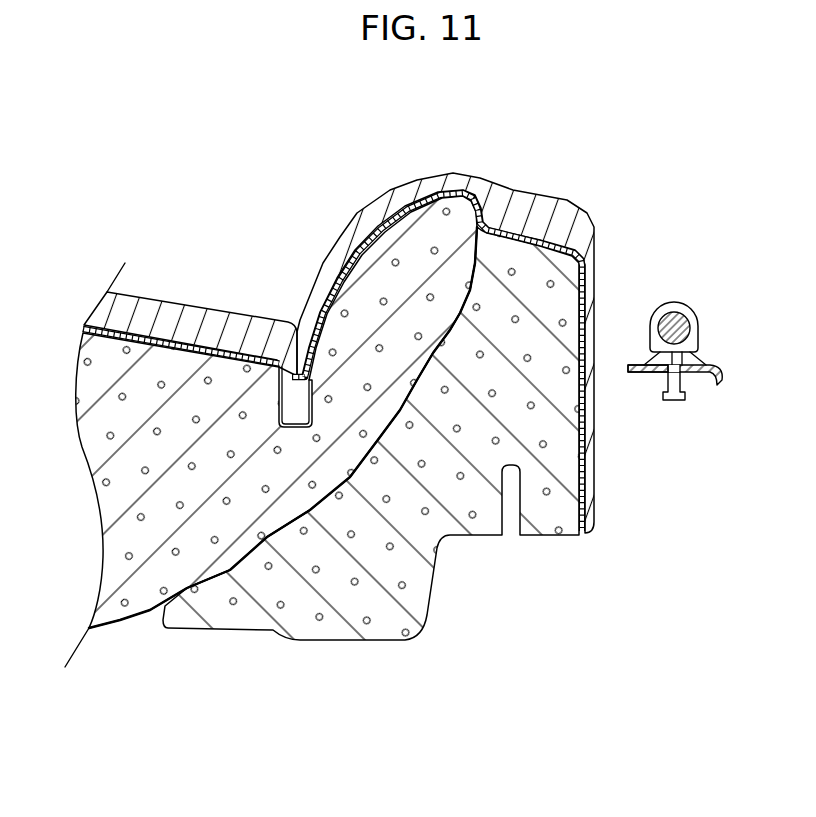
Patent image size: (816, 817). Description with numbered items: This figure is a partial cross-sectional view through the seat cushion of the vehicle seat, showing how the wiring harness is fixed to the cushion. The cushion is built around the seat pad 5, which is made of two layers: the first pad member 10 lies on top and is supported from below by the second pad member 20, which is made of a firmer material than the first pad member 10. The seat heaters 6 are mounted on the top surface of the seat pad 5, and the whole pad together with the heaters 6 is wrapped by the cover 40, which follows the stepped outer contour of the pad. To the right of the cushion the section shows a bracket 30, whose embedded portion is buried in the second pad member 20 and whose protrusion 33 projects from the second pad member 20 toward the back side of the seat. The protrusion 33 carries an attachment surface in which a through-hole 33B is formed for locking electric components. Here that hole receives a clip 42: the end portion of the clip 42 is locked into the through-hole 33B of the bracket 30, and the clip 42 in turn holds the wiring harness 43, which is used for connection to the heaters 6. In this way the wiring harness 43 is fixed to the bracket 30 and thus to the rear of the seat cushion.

The seat pad 5 is at (322, 467).
The seat heater 6 is at (148, 322).
The first pad member 10 is at (128, 607).
The second pad member 20 is at (115, 699).
The bracket 30 is at (704, 354).
The protrusion 33 is at (710, 358).
The through-hole 33B is at (660, 380).
The cover 40 is at (192, 317).
The clip 42 is at (673, 400).
The wiring harness 43 is at (677, 313).